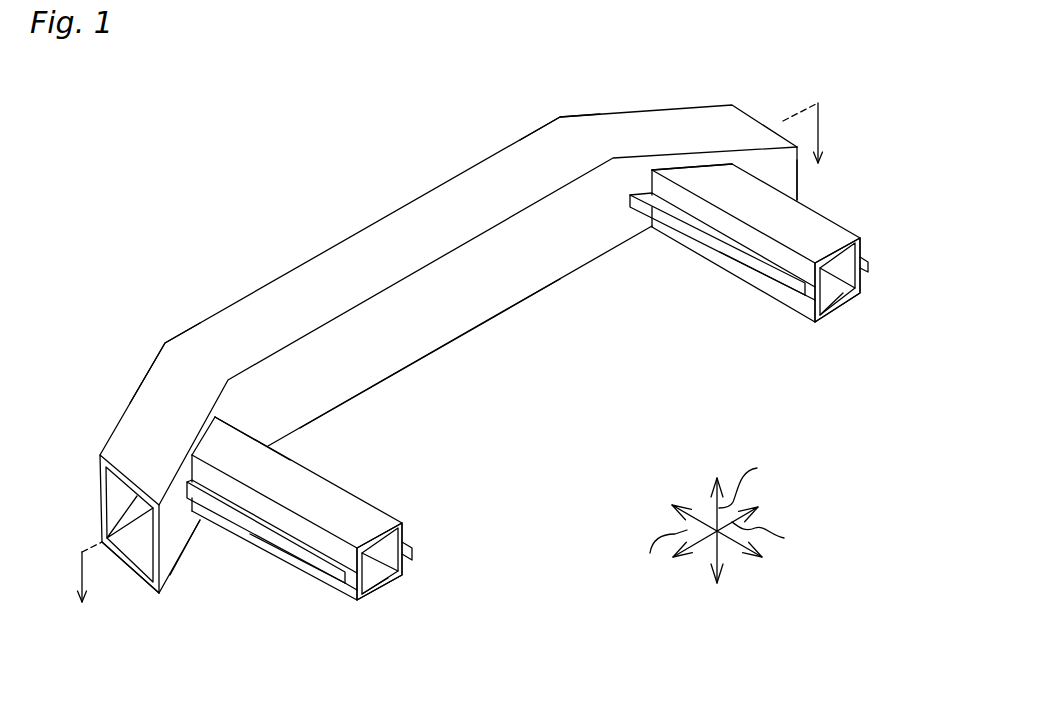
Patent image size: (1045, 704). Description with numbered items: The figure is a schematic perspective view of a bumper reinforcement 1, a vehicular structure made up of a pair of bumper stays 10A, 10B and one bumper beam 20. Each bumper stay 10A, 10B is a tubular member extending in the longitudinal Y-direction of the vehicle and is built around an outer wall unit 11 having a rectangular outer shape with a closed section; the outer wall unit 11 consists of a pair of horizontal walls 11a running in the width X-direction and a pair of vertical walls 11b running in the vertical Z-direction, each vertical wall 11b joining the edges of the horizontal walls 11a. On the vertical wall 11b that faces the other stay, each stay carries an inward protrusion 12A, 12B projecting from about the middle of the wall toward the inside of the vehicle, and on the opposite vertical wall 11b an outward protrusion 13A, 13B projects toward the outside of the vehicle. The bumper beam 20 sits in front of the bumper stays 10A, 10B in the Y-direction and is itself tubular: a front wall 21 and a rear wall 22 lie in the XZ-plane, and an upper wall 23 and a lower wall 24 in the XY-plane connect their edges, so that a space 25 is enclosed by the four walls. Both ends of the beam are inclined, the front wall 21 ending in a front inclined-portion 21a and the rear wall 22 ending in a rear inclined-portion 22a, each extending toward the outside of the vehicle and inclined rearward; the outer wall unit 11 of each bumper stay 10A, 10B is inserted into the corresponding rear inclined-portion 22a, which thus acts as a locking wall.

The bumper reinforcement 1 is at (228, 180).
The bumper beam 20 is at (428, 216).
The front wall 21 is at (102, 488).
The front inclined-portion 21a is at (646, 108).
The rear wall 22 is at (455, 303).
The rear inclined-portion 22a is at (753, 160).
The upper wall 23 is at (370, 250).
The lower wall 24 is at (549, 283).
The space 25 is at (137, 533).
The bumper stay 10A is at (402, 496).
The bumper stay 10B is at (735, 290).
The outer wall unit 11 is at (322, 497).
The horizontal walls 11a is at (362, 482).
The vertical walls 11b is at (405, 575).
The inward protrusion 12A is at (413, 548).
The inward protrusion 12B is at (800, 298).
The outward protrusion 13A is at (293, 553).
The outward protrusion 13B is at (875, 255).